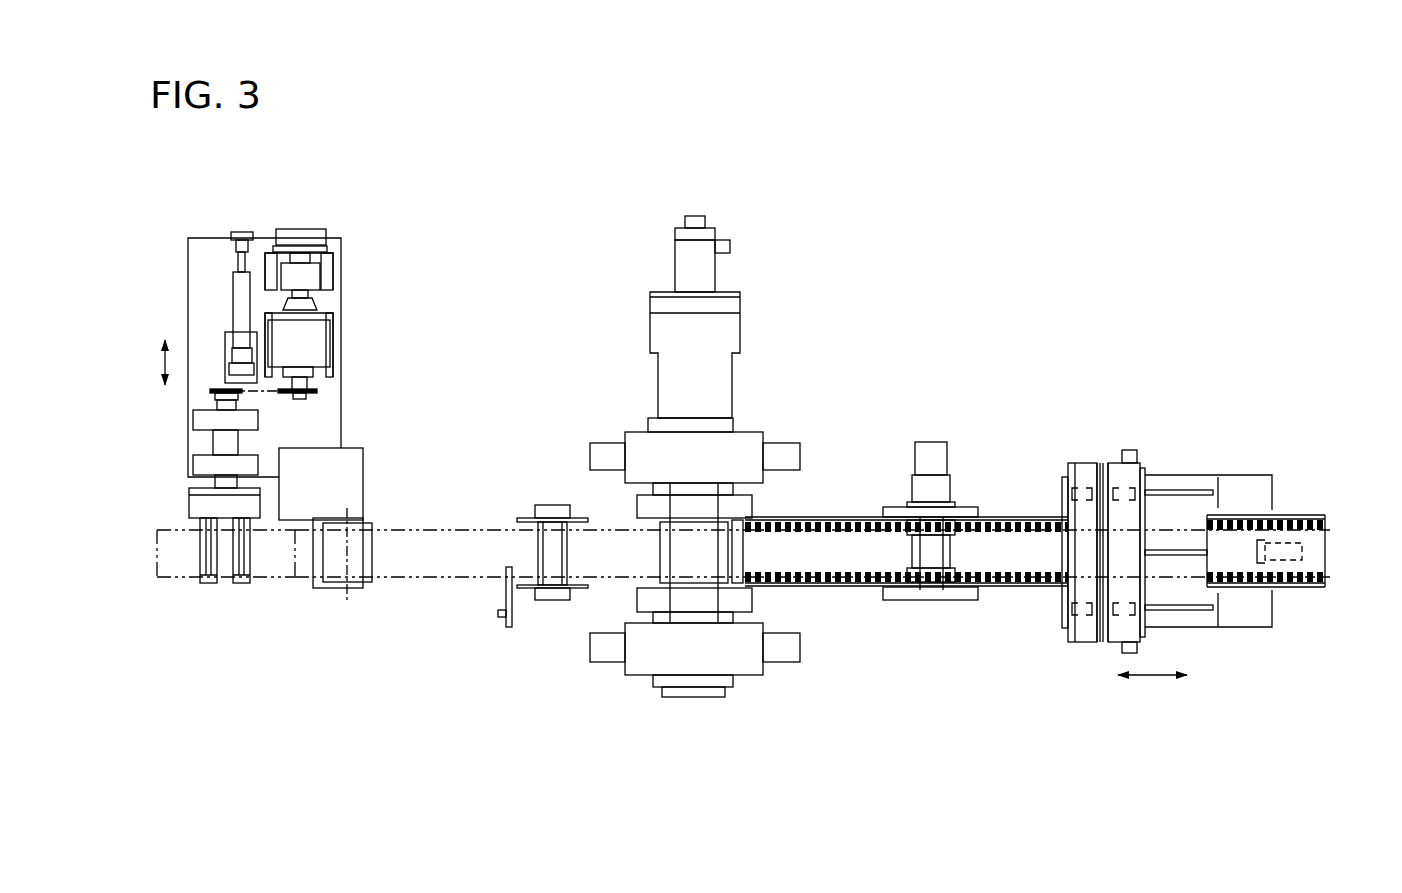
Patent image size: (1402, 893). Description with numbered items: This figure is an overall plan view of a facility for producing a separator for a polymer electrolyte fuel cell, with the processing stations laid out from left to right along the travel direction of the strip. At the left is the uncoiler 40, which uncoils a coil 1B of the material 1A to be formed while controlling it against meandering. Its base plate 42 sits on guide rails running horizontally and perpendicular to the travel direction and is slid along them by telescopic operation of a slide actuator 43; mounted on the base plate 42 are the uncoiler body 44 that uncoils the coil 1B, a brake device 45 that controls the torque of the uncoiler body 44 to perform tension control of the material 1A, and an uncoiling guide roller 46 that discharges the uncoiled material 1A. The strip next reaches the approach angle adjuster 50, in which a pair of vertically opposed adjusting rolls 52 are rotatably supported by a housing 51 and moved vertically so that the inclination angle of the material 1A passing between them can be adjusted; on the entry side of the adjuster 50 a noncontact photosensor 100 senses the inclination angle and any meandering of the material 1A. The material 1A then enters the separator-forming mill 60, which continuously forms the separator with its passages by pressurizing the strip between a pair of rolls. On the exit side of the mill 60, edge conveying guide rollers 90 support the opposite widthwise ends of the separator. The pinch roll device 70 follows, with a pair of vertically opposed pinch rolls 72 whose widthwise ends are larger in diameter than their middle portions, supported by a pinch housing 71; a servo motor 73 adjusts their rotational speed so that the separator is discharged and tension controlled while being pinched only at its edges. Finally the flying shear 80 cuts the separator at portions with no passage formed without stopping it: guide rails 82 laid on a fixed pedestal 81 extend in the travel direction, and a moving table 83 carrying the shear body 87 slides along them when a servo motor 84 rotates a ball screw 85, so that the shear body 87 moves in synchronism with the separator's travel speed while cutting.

The material to be formed 1A is at (447, 590).
The coil 1B is at (175, 590).
The uncoiler 40 is at (242, 414).
The base plate 42 is at (200, 290).
The slide actuator 43 is at (235, 280).
The uncoiler body 44 is at (203, 445).
The brake device 45 is at (332, 262).
The uncoiling guide roller 46 is at (360, 538).
The approach angle adjuster 50 is at (515, 477).
The housing 51 is at (517, 520).
The adjusting rolls 52 is at (552, 540).
The separator-forming mill 60 is at (617, 378).
The pinch roll device 70 is at (906, 494).
The pinch housing 71 is at (964, 512).
The pinch rolls 72 is at (933, 578).
The servo motor 73 is at (930, 448).
The flying shear 80 is at (1210, 498).
The fixed pedestal 81 is at (1197, 490).
The guide rails 82 is at (1165, 490).
The moving table 83 is at (1141, 468).
The servo motor 84 is at (1285, 553).
The ball screw 85 is at (1168, 551).
The shear body 87 is at (1112, 462).
The edge conveying guide rollers 90 is at (845, 518).
The noncontact photosensor 100 is at (510, 633).